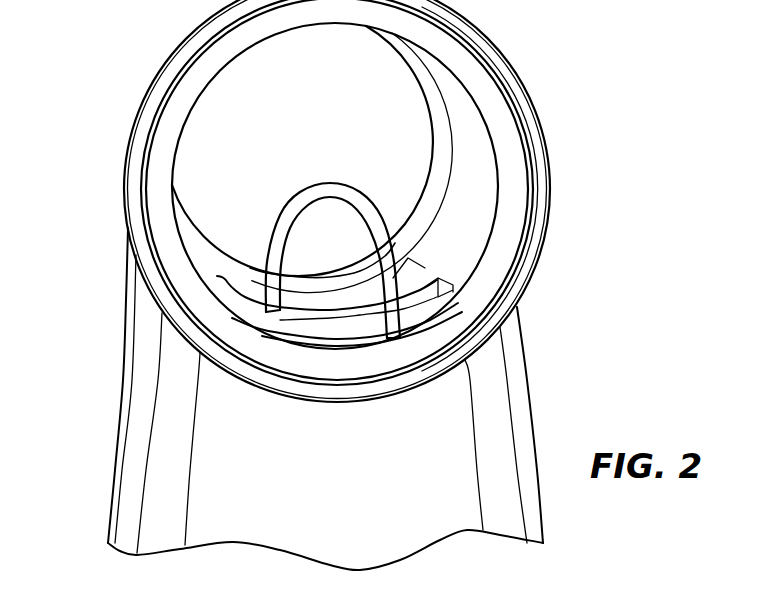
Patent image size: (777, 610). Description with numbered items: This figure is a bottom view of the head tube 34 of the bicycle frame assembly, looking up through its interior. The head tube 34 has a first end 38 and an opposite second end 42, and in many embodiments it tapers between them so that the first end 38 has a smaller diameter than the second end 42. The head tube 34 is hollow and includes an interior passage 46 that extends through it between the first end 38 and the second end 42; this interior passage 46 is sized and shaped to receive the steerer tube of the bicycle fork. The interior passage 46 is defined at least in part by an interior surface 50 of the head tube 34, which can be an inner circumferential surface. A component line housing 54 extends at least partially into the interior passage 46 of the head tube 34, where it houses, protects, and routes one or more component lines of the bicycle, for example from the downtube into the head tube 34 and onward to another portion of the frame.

The head tube 34 is at (104, 170).
The second end 42 is at (540, 147).
The first end 38 is at (231, 245).
The interior passage 46 is at (267, 88).
The interior surface 50 is at (232, 302).
The component line housing 54 is at (338, 190).